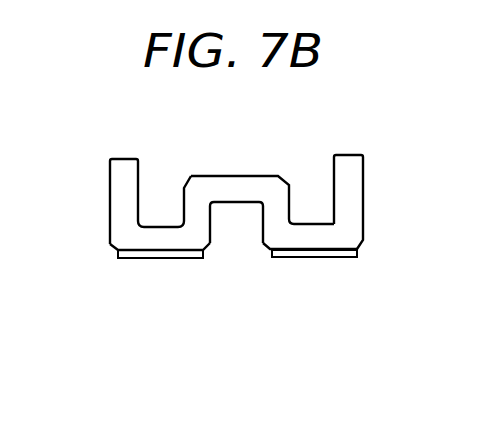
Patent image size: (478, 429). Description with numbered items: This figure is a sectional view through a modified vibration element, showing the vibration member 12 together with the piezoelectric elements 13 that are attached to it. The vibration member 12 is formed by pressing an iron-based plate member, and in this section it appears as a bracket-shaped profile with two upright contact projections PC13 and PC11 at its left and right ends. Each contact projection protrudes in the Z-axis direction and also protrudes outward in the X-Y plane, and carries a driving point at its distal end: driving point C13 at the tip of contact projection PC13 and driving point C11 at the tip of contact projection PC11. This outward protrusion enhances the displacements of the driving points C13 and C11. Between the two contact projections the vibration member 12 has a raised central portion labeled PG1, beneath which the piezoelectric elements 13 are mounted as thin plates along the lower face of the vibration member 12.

The contact projection PC13 is at (118, 197).
The driving point C13 is at (119, 158).
The plate group PG1 is at (233, 182).
The driving point C11 is at (345, 156).
The contact projection PC11 is at (355, 194).
The vibration member 12 is at (317, 237).
The piezoelectric elements 13 is at (155, 257).